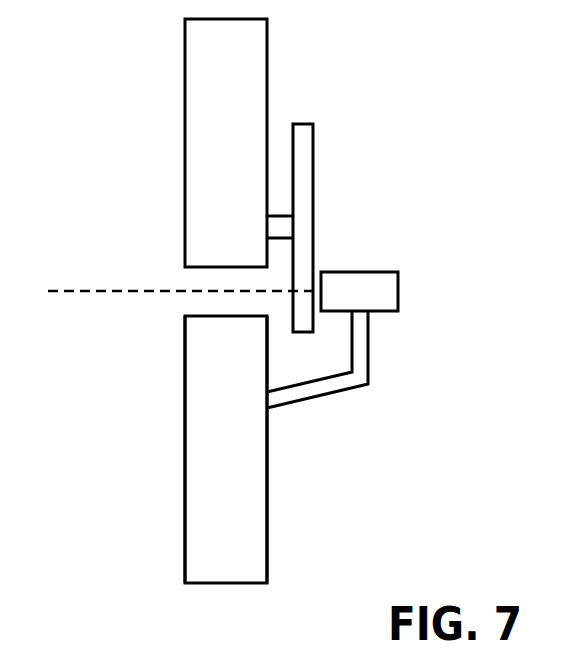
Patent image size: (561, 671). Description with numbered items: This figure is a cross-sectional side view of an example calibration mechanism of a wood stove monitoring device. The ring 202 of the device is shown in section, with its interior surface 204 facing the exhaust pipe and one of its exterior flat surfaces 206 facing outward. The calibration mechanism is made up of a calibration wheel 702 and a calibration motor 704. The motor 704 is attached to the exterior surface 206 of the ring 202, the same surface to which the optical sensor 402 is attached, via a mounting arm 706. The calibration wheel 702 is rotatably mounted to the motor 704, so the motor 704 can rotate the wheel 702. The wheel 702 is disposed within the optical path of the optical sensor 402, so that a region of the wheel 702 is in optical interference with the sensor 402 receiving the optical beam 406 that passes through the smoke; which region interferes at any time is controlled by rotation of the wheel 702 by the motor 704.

The ring 202 is at (215, 573).
The interior surface 204 is at (184, 505).
The exterior flat surface 206 is at (267, 522).
The optical sensor 402 is at (398, 287).
The optical beam 406 is at (68, 291).
The calibration wheel 702 is at (313, 166).
The calibration motor 704 is at (277, 214).
The mounting arm 706 is at (362, 366).